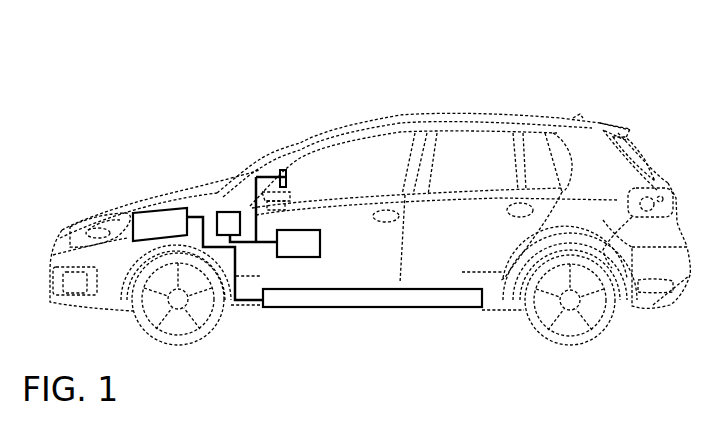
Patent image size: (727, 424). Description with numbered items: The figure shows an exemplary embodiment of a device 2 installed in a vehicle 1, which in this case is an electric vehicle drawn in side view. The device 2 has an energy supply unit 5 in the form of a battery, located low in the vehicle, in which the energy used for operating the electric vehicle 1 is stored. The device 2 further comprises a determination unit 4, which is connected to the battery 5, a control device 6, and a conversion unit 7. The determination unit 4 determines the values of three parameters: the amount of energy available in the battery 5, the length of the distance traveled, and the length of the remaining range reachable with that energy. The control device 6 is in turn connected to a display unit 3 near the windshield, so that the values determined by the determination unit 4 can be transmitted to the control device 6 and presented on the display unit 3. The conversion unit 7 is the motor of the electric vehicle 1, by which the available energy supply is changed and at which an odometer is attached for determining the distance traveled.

The vehicle 1 is at (546, 80).
The device 2 is at (243, 330).
The display unit 3 is at (283, 172).
The determination unit 4 is at (227, 222).
The energy supply unit 5 is at (355, 300).
The control device 6 is at (308, 242).
The conversion unit 7 is at (161, 219).